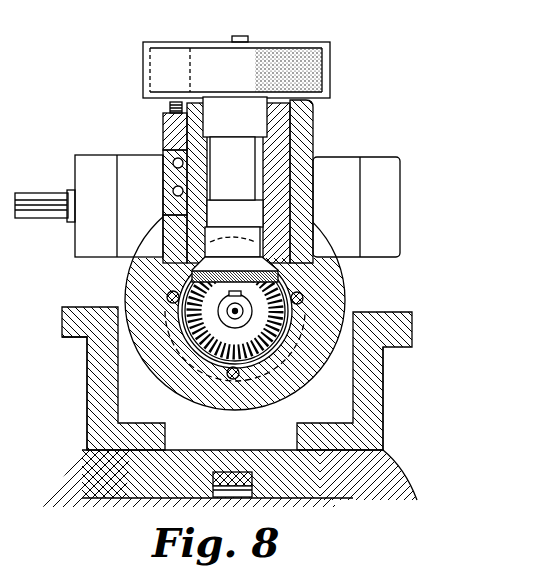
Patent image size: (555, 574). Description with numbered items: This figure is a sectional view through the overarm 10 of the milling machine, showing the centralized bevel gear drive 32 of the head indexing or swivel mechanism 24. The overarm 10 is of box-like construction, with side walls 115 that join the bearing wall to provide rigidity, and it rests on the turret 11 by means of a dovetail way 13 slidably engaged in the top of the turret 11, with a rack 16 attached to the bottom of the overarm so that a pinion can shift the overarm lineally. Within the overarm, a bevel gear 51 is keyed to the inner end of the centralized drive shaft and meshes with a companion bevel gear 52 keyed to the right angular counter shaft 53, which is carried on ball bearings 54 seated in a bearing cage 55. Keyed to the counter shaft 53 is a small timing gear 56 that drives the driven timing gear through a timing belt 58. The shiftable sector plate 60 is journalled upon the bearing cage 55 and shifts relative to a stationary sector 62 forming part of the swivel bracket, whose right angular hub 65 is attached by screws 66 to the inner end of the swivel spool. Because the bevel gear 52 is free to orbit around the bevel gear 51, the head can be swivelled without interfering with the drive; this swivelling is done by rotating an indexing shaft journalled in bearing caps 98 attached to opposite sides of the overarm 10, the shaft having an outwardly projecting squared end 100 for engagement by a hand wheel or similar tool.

The overarm 10 is at (390, 413).
The turret 11 is at (415, 481).
The dovetail way 13 is at (123, 477).
The rack 16 is at (225, 497).
The head swivel mechanism 24 is at (316, 182).
The centralized bevel gear drive 32 is at (272, 284).
The bevel gear 51 is at (280, 338).
The companion bevel gear 52 is at (187, 283).
The counter shaft 53 is at (235, 153).
The ball bearings 54 is at (253, 128).
The bearing cage 55 is at (200, 177).
The small timing gear 56 is at (256, 42).
The timing belt 58 is at (326, 68).
The sector plate 60 is at (163, 122).
The stationary sector 62 is at (163, 153).
The right angular hub 65 is at (190, 392).
The screws 66 is at (172, 298).
The bearing caps 98 is at (85, 236).
The squared end 100 is at (42, 193).
The side walls 115 is at (95, 380).